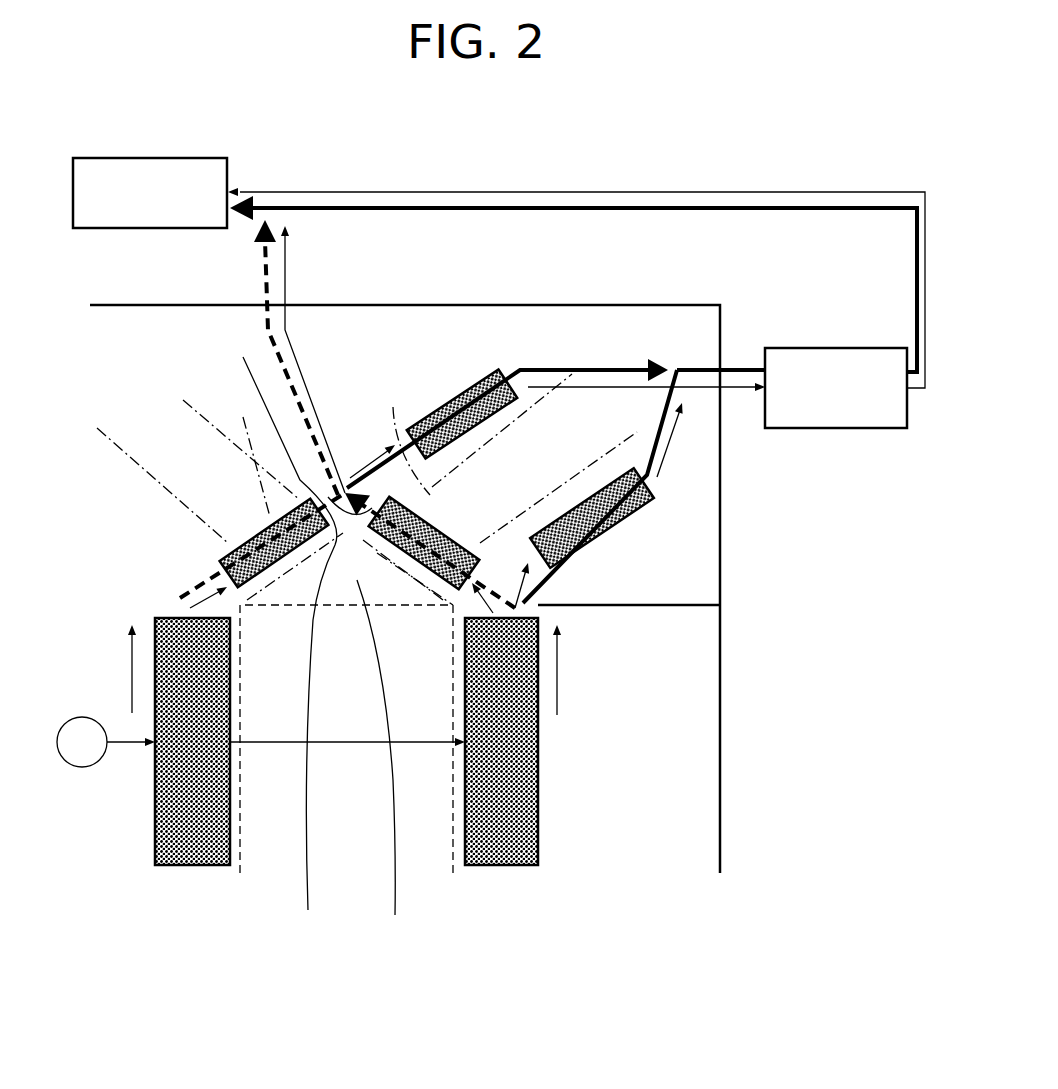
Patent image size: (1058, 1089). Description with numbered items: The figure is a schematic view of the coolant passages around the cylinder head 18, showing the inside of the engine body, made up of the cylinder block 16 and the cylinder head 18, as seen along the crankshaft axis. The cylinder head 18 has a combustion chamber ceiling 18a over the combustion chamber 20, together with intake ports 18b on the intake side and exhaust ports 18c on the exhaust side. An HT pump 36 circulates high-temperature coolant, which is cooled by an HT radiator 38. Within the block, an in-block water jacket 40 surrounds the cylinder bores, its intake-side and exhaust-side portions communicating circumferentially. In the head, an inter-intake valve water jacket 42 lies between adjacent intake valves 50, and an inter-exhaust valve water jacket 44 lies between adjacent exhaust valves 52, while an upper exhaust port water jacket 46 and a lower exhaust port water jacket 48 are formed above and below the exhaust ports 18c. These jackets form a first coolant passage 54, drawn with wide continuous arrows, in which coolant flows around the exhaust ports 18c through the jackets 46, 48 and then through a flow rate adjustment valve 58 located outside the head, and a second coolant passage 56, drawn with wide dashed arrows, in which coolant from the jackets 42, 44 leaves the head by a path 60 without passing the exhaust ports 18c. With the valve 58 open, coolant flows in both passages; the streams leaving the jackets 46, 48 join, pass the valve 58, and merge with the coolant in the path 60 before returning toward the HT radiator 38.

The cylinder block 16 is at (720, 707).
The cylinder head 18 is at (720, 527).
The combustion chamber ceiling 18a is at (307, 647).
The intake ports 18b is at (183, 400).
The exhaust ports 18c is at (530, 408).
The combustion chamber 20 is at (386, 768).
The HT pump 36 is at (80, 718).
The HT radiator 38 is at (198, 157).
The in-block water jacket 40 is at (155, 830).
The inter-intake valve water jacket 42 is at (250, 536).
The inter-exhaust valve water jacket 44 is at (447, 535).
The upper exhaust port water jacket 46 is at (467, 383).
The lower exhaust port water jacket 48 is at (607, 527).
The intake valves 50 is at (243, 417).
The exhaust valves 52 is at (404, 435).
The first coolant passage 54 is at (630, 365).
The second coolant passage 56 is at (280, 367).
The flow rate adjustment valve 58 is at (835, 348).
The path 60 is at (305, 366).